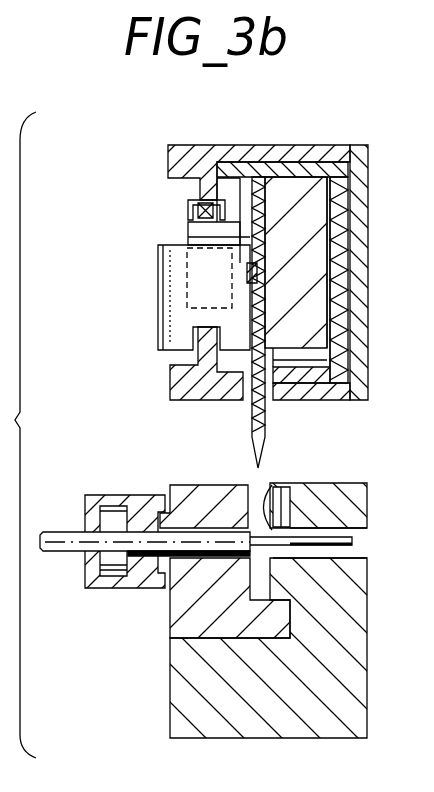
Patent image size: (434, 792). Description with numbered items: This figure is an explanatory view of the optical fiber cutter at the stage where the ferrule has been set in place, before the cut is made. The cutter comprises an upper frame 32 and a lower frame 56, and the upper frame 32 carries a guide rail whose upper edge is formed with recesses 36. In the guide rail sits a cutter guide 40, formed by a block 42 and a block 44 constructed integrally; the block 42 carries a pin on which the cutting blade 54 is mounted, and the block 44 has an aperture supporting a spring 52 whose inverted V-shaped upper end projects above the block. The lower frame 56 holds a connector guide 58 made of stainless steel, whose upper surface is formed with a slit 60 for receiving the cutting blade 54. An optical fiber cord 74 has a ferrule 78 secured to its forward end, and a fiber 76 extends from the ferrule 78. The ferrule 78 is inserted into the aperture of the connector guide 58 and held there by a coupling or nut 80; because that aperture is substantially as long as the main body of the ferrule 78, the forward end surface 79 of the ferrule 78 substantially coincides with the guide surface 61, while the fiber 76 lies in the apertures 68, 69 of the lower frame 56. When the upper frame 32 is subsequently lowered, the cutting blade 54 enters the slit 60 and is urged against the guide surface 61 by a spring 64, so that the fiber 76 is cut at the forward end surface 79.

The upper frame 32 is at (345, 148).
The recesses 36 is at (196, 204).
The cutter guide 40 is at (242, 233).
The block 42 is at (310, 237).
The block 44 is at (160, 318).
The spring 52 is at (190, 233).
The cutting blade 54 is at (260, 326).
The lower frame 56 is at (335, 692).
The connector guide 58 is at (185, 627).
The slit 60 is at (263, 470).
The guide surface 61 is at (245, 500).
The spring 64 is at (305, 483).
The aperture 68 is at (342, 558).
The aperture 69 is at (354, 541).
The optical fiber cord 74 is at (57, 527).
The fiber 76 is at (330, 523).
The ferrule 78 is at (153, 545).
The forward end surface 79 is at (248, 558).
The nut 80 is at (124, 496).